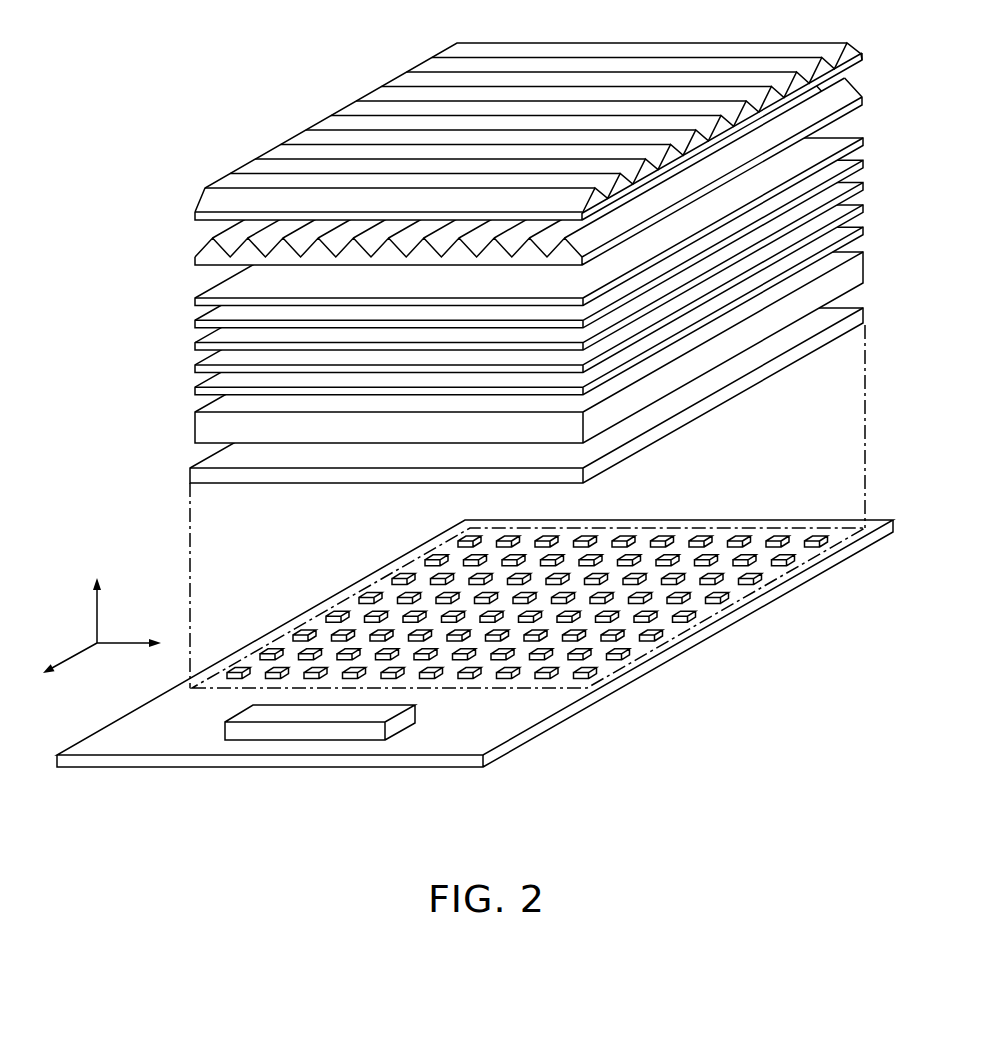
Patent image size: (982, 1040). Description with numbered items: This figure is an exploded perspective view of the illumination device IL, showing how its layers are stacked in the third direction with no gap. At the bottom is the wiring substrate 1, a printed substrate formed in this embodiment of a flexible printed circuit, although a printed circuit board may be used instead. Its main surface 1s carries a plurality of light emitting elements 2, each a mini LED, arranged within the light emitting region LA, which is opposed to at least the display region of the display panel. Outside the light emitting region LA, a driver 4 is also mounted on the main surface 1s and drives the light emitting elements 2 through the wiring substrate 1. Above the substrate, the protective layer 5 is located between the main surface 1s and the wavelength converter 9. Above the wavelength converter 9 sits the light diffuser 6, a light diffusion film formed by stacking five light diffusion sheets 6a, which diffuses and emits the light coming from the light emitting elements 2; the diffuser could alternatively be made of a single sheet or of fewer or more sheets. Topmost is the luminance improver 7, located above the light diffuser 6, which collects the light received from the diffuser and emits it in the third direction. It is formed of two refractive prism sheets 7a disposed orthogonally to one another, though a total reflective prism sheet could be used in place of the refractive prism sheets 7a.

The illumination device IL is at (197, 77).
The wiring substrate 1 is at (475, 684).
The main surface 1s is at (507, 718).
The light emitting element 2 is at (370, 591).
The driver 4 is at (335, 733).
The protective layer 5 is at (720, 398).
The light diffuser 6 is at (141, 292).
The light diffusion sheet 6a is at (196, 326).
The luminance improver 7 is at (141, 182).
The refractive prism sheet 7a is at (197, 220).
The wavelength converter 9 is at (197, 425).
The light emitting region LA is at (632, 682).